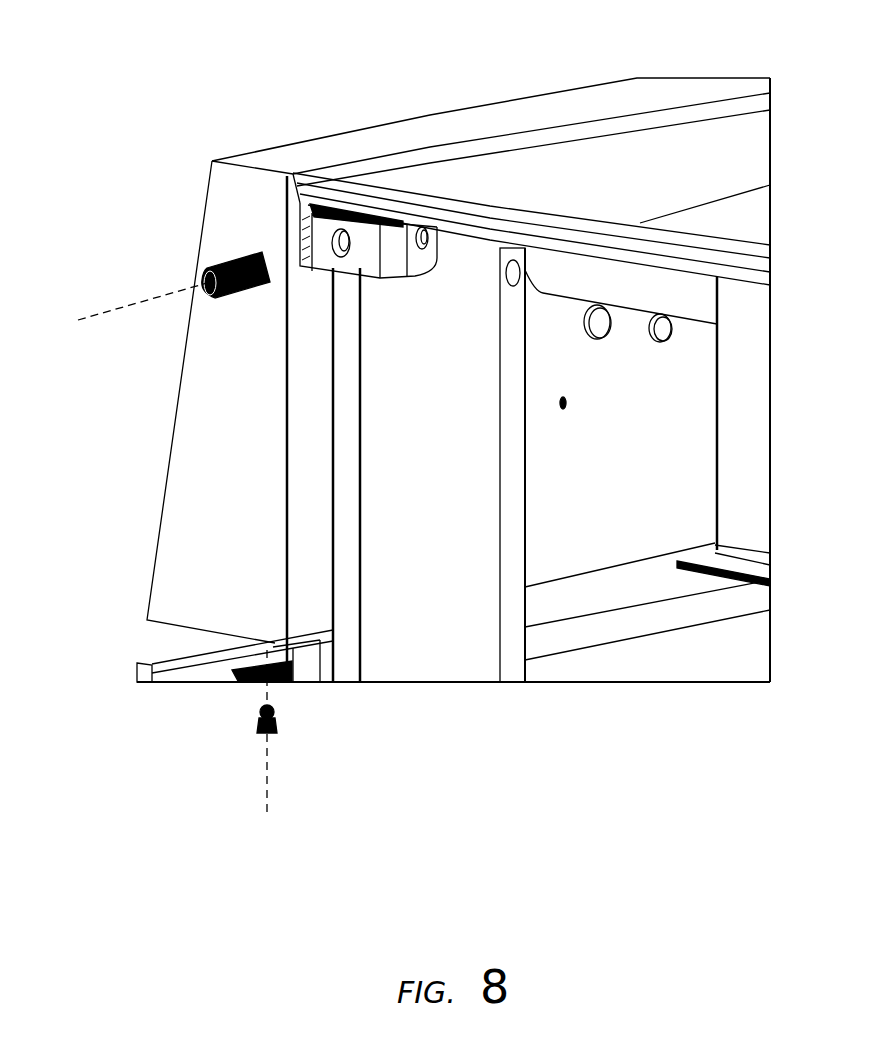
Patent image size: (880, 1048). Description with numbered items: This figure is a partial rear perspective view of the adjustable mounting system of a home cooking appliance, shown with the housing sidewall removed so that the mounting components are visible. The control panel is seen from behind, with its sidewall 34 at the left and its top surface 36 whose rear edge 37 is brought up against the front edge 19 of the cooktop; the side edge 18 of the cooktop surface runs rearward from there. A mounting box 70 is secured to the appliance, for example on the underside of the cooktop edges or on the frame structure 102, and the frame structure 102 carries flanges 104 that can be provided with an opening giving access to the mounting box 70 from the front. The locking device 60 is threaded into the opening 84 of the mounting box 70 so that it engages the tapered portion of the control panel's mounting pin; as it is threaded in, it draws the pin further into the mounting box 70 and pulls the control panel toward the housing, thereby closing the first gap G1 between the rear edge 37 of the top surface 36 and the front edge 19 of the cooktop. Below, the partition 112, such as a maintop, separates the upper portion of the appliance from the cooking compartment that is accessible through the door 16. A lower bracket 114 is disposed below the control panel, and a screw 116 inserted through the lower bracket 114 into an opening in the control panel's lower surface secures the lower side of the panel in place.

The first gap G1 is at (322, 160).
The door 16 is at (135, 672).
The side edge 18 is at (543, 207).
The front edge 19 is at (723, 97).
The sidewall 34 is at (170, 497).
The top surface 36 is at (585, 95).
The rear edge 37 is at (473, 138).
The locking device 60 is at (246, 298).
The mounting box 70 is at (415, 265).
The opening 84 is at (343, 258).
The frame structure 102 is at (450, 668).
The flange 104 is at (360, 455).
The partition 112 is at (705, 663).
The lower bracket 114 is at (305, 678).
The screw 116 is at (257, 718).